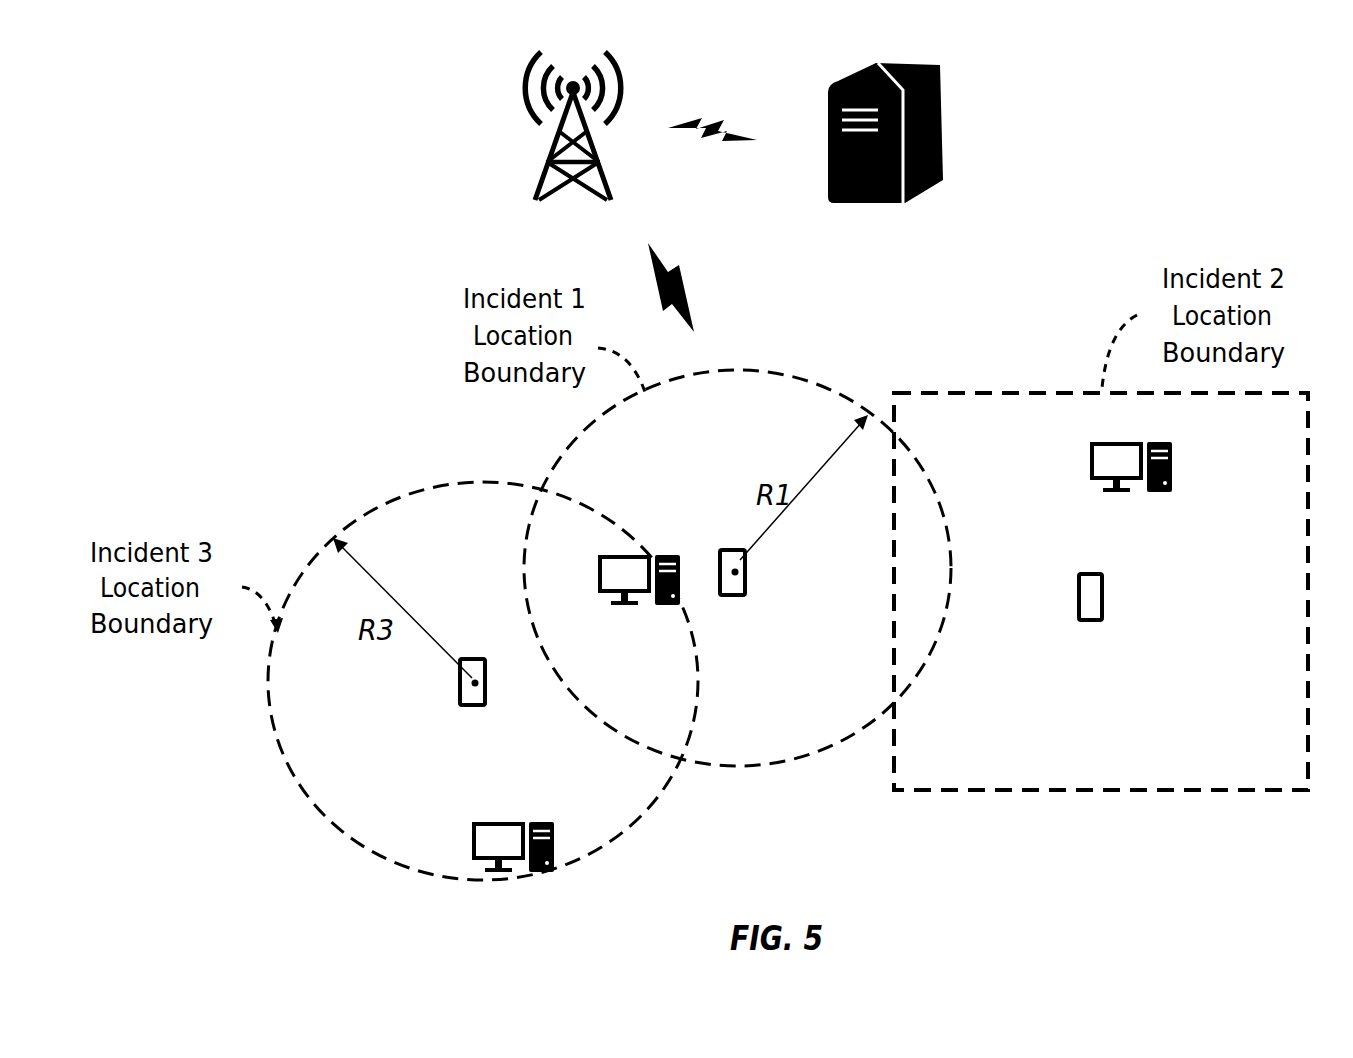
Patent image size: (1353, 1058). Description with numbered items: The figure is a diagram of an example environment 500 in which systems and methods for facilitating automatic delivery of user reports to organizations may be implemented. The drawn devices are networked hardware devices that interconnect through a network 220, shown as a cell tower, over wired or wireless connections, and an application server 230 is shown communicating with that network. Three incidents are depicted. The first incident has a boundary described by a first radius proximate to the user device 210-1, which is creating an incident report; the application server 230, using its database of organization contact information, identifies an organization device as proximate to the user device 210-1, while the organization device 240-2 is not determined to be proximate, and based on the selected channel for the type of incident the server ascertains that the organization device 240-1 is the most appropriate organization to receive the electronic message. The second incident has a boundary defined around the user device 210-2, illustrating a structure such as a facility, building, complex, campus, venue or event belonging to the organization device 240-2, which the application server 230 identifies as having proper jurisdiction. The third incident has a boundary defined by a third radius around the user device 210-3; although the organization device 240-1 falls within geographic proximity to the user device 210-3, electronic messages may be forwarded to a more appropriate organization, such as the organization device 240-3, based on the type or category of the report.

The environment 500 is at (289, 100).
The network 220 is at (545, 160).
The application server 230 is at (945, 88).
The organization device 240-1 is at (596, 580).
The organization device 240-2 is at (1090, 465).
The organization device 240-3 is at (471, 845).
The user device 210-1 is at (732, 600).
The user device 210-2 is at (1090, 626).
The user device 210-3 is at (470, 710).